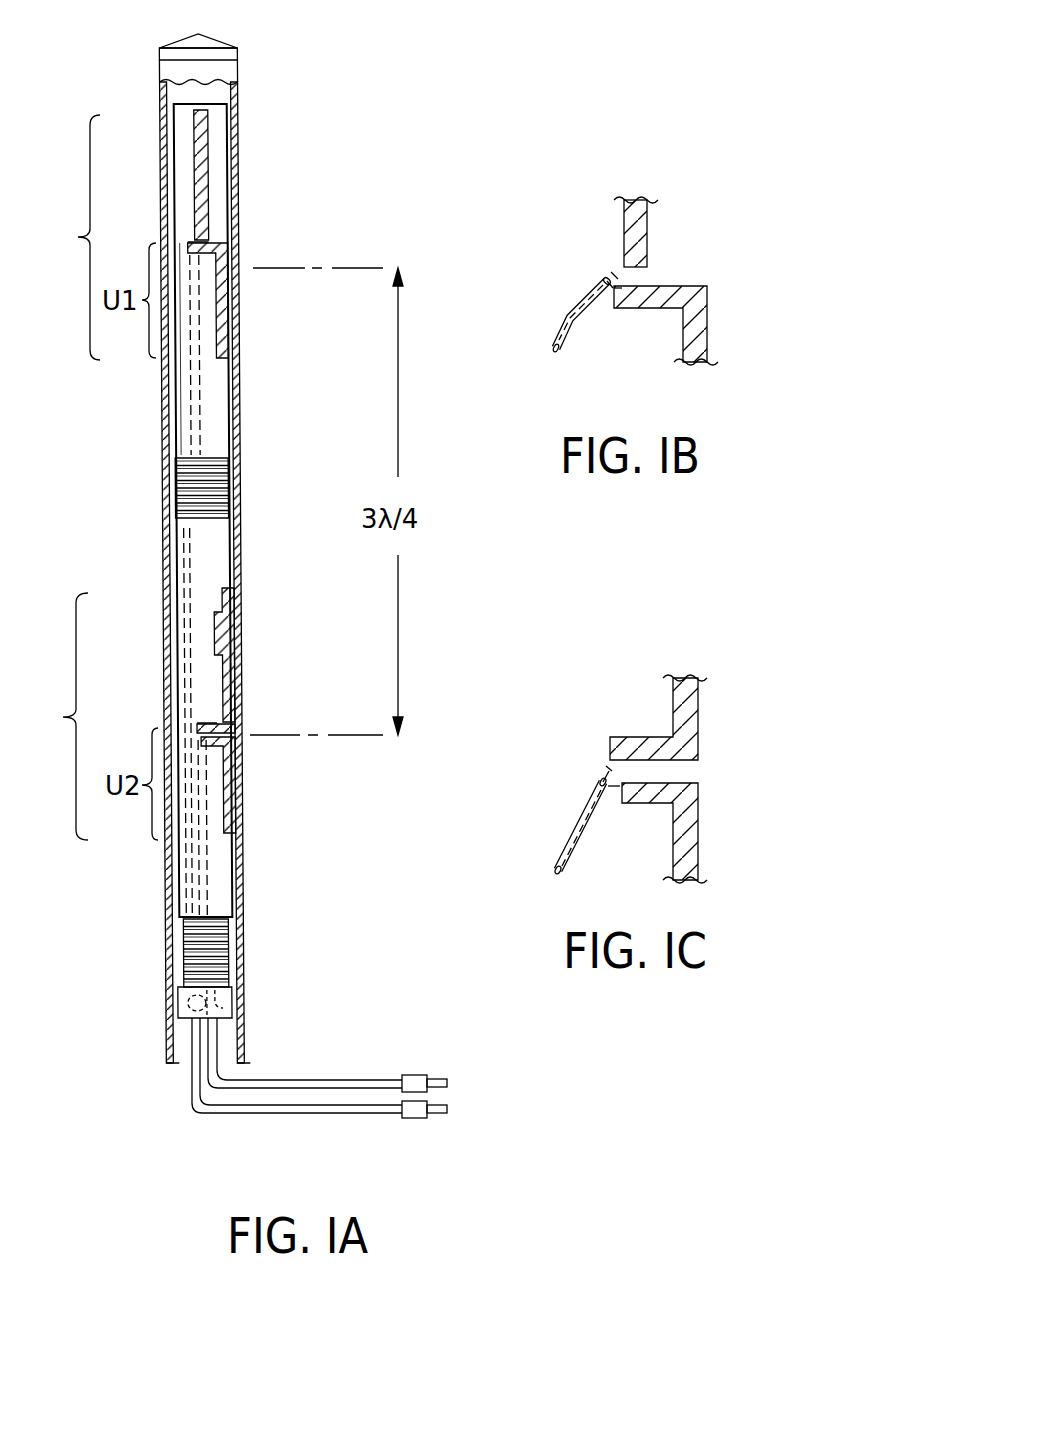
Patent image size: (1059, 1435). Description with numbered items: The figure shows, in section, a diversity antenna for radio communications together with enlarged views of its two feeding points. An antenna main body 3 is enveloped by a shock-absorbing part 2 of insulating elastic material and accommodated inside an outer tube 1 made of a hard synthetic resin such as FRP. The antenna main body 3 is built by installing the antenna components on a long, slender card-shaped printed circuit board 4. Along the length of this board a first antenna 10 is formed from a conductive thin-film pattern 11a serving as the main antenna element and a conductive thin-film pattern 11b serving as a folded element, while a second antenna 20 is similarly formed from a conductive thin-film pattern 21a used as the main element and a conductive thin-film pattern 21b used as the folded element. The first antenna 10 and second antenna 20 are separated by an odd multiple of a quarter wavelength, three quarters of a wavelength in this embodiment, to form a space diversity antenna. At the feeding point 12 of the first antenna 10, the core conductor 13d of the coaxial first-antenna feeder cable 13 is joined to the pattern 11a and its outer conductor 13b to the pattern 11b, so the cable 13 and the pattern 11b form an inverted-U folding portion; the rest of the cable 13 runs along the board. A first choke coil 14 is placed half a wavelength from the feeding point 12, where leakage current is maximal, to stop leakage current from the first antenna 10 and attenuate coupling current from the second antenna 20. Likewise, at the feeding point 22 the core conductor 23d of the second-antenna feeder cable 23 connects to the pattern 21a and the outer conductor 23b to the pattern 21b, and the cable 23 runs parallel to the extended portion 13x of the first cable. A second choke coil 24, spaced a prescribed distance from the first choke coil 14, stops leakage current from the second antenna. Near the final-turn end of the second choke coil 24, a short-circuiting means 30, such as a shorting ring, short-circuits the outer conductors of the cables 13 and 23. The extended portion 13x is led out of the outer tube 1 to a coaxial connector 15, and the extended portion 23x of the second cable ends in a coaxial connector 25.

In FIG. 1A, the outer tube 1 is at (238, 63).
In FIG. 1A, the shock-absorbing part 2 is at (188, 85).
In FIG. 1A, the antenna main body 3 is at (178, 125).
In FIG. 1A, the printed circuit board 4 is at (215, 107).
In FIG. 1A, the first antenna 10 is at (66, 252).
In FIG. 1A, the conductive thin-film pattern 11a is at (210, 166).
In FIG. 1B, the conductive thin-film pattern 11a is at (648, 212).
In FIG. 1A, the conductive thin-film pattern 11b is at (220, 298).
In FIG. 1B, the conductive thin-film pattern 11b is at (687, 362).
In FIG. 1A, the feeding point 12 is at (186, 243).
In FIG. 1B, the feeding point 12 is at (598, 245).
In FIG. 1A, the first-antenna feeder cable 13 is at (197, 367).
In FIG. 1B, the first-antenna feeder cable 13 is at (557, 333).
In FIG. 1B, the outer conductor 13b is at (613, 292).
In FIG. 1B, the core conductor 13d is at (612, 278).
In FIG. 1A, the extended portion 13x is at (182, 562).
In FIG. 1A, the first choke coil 14 is at (220, 482).
In FIG. 1A, the coaxial connector 15 is at (423, 1075).
In FIG. 1A, the second antenna 20 is at (54, 734).
In FIG. 1A, the conductive thin-film pattern 21a is at (223, 628).
In FIG. 1C, the conductive thin-film pattern 21a is at (693, 700).
In FIG. 1A, the conductive thin-film pattern 21b is at (226, 774).
In FIG. 1C, the conductive thin-film pattern 21b is at (697, 840).
In FIG. 1A, the feeding point 22 is at (192, 728).
In FIG. 1C, the feeding point 22 is at (590, 743).
In FIG. 1A, the second-antenna feeder cable 23 is at (205, 863).
In FIG. 1C, the second-antenna feeder cable 23 is at (560, 838).
In FIG. 1C, the outer conductor 23b is at (617, 797).
In FIG. 1C, the core conductor 23d is at (607, 772).
In FIG. 1A, the extended portion 23x is at (320, 1115).
In FIG. 1A, the second choke coil 24 is at (230, 945).
In FIG. 1A, the coaxial connector 25 is at (408, 1117).
In FIG. 1A, the short-circuiting means 30 is at (188, 1002).